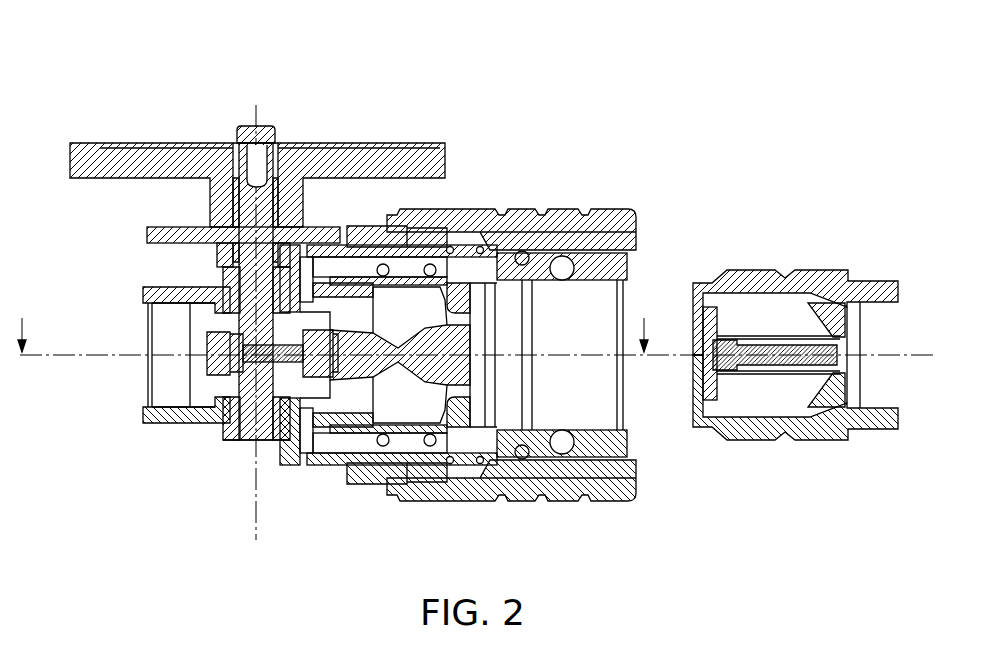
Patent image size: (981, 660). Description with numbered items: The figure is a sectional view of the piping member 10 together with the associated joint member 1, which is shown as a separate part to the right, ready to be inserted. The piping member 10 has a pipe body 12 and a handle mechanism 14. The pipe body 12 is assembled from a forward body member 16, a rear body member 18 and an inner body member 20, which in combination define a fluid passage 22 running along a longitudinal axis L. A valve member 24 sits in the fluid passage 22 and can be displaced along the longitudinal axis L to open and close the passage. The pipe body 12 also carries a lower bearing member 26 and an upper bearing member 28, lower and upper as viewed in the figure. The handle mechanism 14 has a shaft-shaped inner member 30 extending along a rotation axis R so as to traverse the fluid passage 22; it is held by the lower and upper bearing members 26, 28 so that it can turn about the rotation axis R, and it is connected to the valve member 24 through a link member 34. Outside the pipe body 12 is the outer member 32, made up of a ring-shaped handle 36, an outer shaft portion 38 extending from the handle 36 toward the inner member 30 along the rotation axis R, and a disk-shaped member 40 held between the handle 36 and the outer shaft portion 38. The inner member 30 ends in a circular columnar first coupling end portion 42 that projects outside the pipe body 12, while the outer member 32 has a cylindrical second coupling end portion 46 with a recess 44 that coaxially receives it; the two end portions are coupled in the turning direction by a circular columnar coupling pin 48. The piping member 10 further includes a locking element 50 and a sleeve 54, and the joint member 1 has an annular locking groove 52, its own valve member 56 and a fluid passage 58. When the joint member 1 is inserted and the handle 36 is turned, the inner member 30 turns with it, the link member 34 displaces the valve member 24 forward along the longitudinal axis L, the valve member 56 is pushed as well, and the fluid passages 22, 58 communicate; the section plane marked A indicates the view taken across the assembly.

The joint member 1 is at (795, 313).
The piping member 10 is at (258, 118).
The pipe body 12 is at (471, 276).
The handle mechanism 14 is at (251, 144).
The forward body member 16 is at (461, 250).
The rear body member 18 is at (340, 226).
The inner body member 20 is at (404, 282).
The fluid passage 22 is at (562, 348).
The valve member 24 is at (410, 365).
The lower bearing member 26 is at (230, 437).
The upper bearing member 28 is at (281, 440).
The inner member 30 is at (207, 343).
The outer member 32 is at (232, 157).
The link member 34 is at (310, 440).
The handle 36 is at (133, 170).
The outer shaft portion 38 is at (246, 218).
The disk-shaped member 40 is at (157, 237).
The first coupling end portion 42 is at (215, 268).
The recess 44 is at (220, 270).
The second coupling end portion 46 is at (217, 252).
The coupling pin 48 is at (240, 323).
The locking element 50 is at (563, 268).
The annular locking groove 52 is at (782, 270).
The sleeve 54 is at (540, 243).
The valve member 56 is at (750, 366).
The fluid passage 58 is at (779, 328).
The section plane A is at (342, 334).
The longitudinal axis L is at (65, 356).
The rotation axis R is at (258, 527).